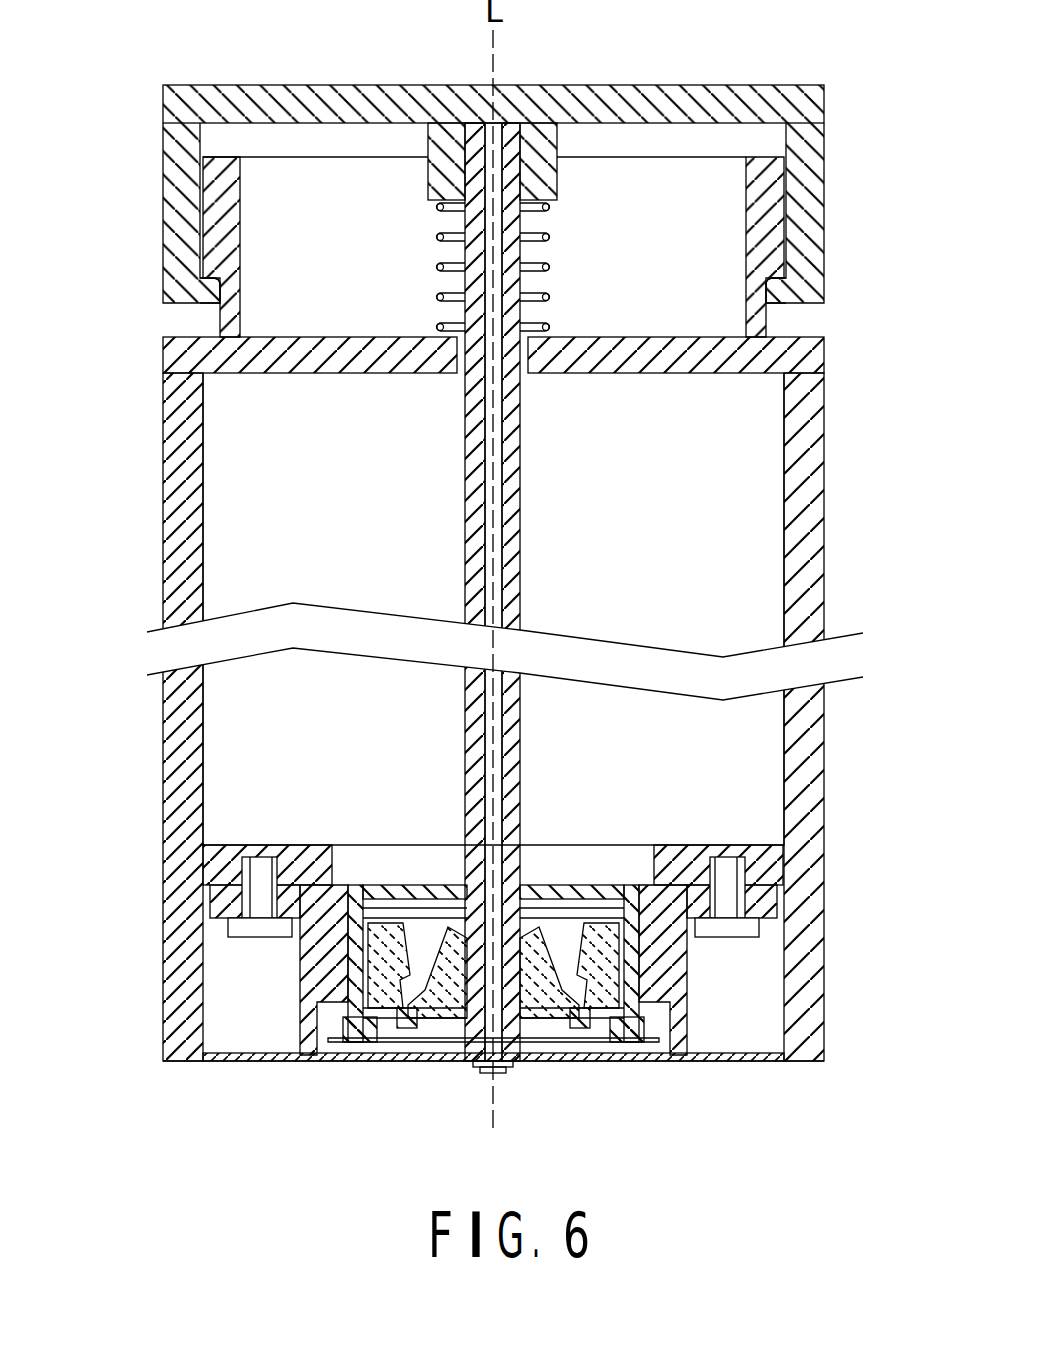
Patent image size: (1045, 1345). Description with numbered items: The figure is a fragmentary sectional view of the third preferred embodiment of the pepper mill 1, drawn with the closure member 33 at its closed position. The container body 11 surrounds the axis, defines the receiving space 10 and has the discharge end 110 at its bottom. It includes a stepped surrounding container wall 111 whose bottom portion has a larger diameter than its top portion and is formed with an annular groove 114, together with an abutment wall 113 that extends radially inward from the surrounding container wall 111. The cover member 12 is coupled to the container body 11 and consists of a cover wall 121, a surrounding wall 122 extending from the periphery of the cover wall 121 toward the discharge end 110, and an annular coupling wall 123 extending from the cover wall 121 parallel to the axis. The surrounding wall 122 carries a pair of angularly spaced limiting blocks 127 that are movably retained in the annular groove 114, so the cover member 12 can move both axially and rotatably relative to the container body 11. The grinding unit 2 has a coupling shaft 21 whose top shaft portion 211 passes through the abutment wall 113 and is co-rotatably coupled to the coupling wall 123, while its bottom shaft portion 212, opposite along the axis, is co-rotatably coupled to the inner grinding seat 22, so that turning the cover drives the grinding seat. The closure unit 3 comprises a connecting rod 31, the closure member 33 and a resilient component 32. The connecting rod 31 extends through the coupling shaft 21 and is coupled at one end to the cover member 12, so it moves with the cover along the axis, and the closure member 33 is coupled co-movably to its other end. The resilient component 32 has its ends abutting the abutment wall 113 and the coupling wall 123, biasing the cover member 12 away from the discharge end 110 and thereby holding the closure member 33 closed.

The pepper mill 1 is at (481, 650).
The receiving space 10 is at (753, 545).
The container body 11 is at (481, 650).
The discharge end 110 is at (203, 1061).
The surrounding container wall 111 is at (187, 445).
The abutment wall 113 is at (290, 350).
The annular groove 114 is at (212, 322).
The cover member 12 is at (484, 151).
The cover wall 121 is at (600, 110).
The surrounding wall 122 is at (822, 190).
The annular coupling wall 123 is at (444, 160).
The limiting blocks 127 is at (205, 292).
The grinding unit 2 is at (550, 981).
The coupling shaft 21 is at (653, 577).
The top shaft portion 211 is at (508, 150).
The bottom shaft portion 212 is at (477, 1033).
The inner grinding seat 22 is at (557, 1013).
The closure unit 3 is at (566, 580).
The connecting rod 31 is at (507, 398).
The resilient component 32 is at (550, 213).
The closure member 33 is at (727, 1061).